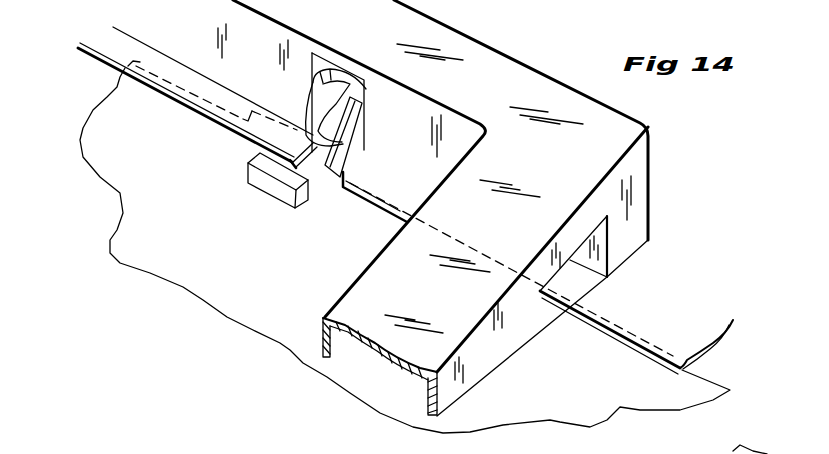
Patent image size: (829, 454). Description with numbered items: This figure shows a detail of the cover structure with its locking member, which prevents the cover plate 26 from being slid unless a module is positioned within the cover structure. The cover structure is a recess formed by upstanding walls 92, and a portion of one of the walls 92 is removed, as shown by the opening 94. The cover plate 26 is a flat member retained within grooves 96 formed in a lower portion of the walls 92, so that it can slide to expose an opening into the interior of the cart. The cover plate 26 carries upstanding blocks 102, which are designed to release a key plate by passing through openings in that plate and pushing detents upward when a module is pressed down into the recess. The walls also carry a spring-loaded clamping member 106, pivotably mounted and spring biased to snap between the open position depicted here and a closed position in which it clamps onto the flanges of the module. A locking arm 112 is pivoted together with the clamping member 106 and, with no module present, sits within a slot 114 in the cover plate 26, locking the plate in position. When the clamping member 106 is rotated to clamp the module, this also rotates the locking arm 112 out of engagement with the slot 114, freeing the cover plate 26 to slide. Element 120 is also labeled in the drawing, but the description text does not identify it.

The cover plate 26 is at (217, 304).
The upstanding walls 92 is at (547, 83).
The opening 94 is at (600, 252).
The grooves 96 is at (297, 133).
The upstanding blocks 102 is at (275, 185).
The clamping member 106 is at (343, 87).
The locking arm 112 is at (352, 141).
The slot 114 is at (340, 168).
The end member 120 is at (762, 452).